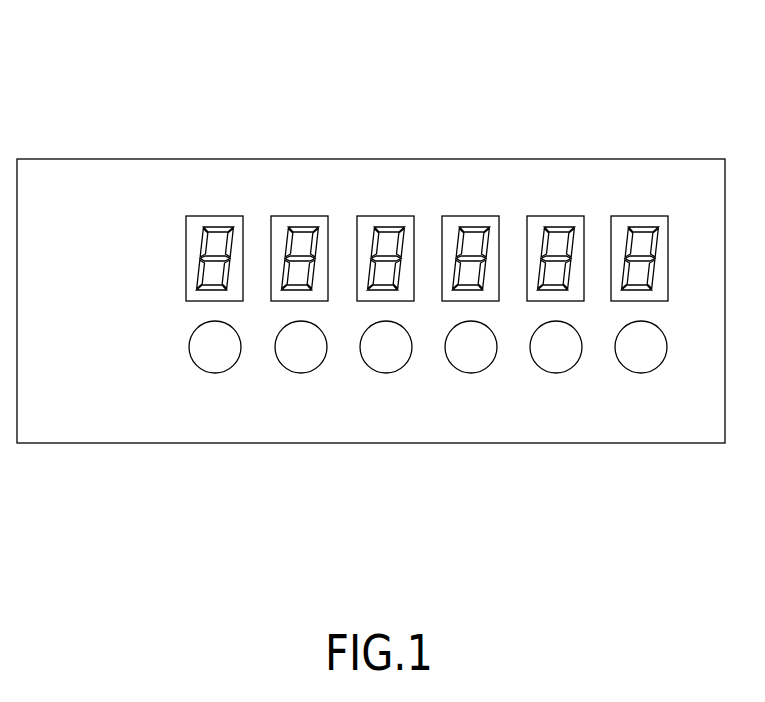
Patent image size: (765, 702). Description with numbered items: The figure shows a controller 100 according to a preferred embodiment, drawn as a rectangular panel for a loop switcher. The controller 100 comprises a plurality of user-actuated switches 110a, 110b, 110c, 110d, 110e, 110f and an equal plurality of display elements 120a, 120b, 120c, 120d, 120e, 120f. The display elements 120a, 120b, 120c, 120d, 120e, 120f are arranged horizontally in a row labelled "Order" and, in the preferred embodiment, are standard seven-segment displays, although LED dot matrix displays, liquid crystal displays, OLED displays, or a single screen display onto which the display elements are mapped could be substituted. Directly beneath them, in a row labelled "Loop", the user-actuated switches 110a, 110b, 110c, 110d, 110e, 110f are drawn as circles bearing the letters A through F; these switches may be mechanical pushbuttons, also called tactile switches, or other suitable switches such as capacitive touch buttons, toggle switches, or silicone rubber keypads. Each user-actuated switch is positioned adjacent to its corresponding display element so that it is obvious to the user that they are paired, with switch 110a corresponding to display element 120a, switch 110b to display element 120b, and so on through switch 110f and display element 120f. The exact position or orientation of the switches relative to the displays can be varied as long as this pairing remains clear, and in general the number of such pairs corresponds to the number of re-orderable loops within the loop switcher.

The controller 100 is at (86, 159).
The display element 120a is at (214, 216).
The display element 120b is at (300, 216).
The display element 120c is at (386, 216).
The display element 120d is at (471, 216).
The display element 120e is at (556, 216).
The display element 120f is at (641, 216).
The user-actuated switch 110a is at (214, 373).
The user-actuated switch 110b is at (300, 373).
The user-actuated switch 110c is at (386, 373).
The user-actuated switch 110d is at (471, 373).
The user-actuated switch 110e is at (556, 373).
The user-actuated switch 110f is at (641, 373).